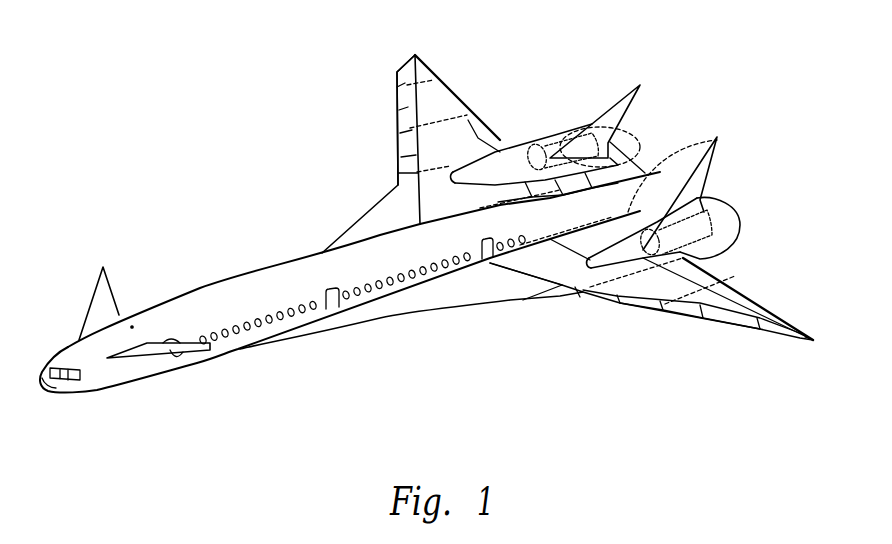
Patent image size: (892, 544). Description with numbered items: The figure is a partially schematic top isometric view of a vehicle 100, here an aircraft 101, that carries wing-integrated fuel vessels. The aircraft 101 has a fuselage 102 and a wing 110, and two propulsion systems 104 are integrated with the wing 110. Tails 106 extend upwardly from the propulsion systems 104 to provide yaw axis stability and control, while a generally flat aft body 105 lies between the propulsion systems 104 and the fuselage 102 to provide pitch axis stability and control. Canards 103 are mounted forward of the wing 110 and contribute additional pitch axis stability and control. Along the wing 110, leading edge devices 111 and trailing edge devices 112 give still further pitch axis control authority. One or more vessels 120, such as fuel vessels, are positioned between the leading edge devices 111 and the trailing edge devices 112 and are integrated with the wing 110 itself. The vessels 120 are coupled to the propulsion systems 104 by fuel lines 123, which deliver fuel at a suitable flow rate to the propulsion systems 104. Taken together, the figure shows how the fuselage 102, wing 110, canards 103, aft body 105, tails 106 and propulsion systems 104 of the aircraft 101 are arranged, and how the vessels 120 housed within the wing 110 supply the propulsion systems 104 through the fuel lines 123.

The vehicle 100 is at (330, 393).
The aircraft 101 is at (234, 348).
The fuselage 102 is at (218, 282).
The canards 103 is at (92, 295).
The propulsion systems 104 is at (516, 127).
The aft body 105 is at (672, 150).
The tails 106 is at (637, 84).
The wing 110 is at (562, 294).
The leading edge devices 111 is at (697, 328).
The trailing edge devices 112 is at (788, 312).
The vessels 120 is at (437, 113).
The fuel lines 123 is at (632, 130).